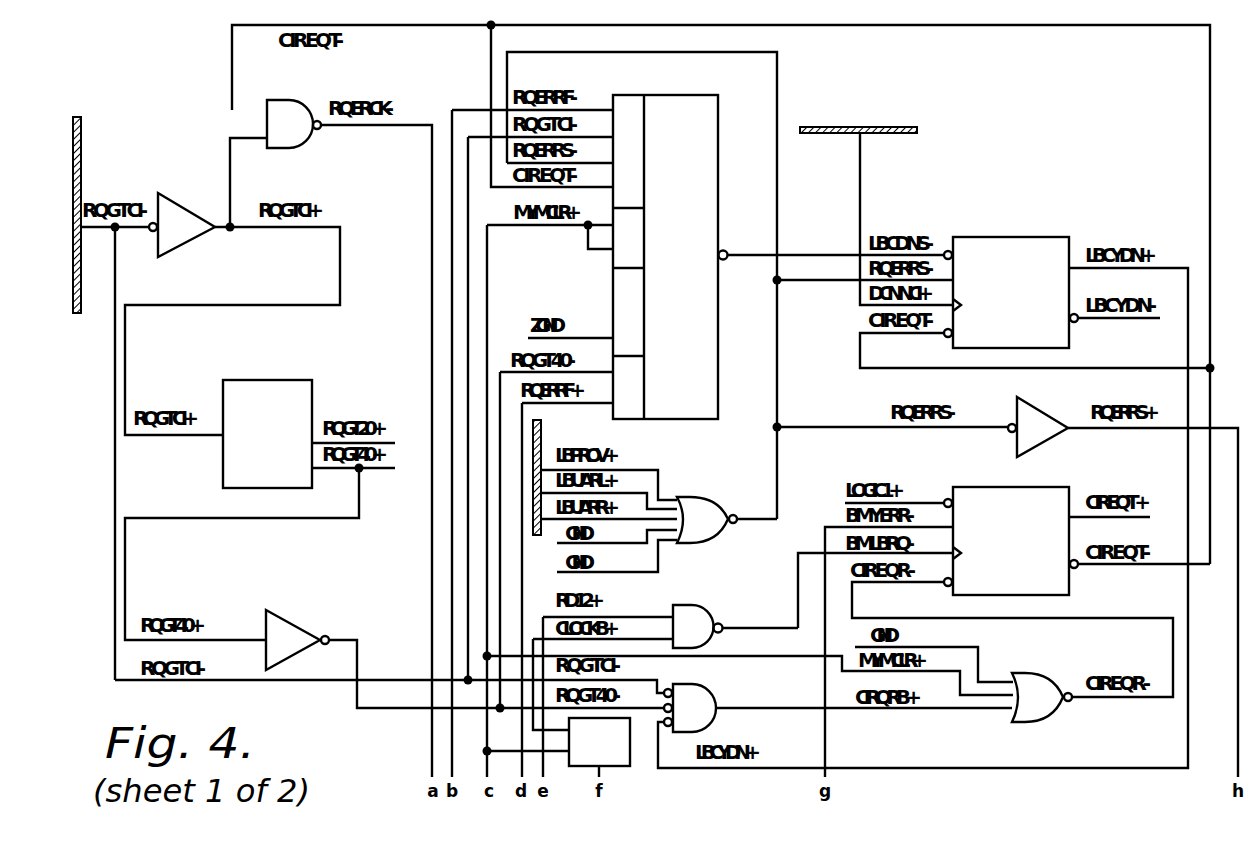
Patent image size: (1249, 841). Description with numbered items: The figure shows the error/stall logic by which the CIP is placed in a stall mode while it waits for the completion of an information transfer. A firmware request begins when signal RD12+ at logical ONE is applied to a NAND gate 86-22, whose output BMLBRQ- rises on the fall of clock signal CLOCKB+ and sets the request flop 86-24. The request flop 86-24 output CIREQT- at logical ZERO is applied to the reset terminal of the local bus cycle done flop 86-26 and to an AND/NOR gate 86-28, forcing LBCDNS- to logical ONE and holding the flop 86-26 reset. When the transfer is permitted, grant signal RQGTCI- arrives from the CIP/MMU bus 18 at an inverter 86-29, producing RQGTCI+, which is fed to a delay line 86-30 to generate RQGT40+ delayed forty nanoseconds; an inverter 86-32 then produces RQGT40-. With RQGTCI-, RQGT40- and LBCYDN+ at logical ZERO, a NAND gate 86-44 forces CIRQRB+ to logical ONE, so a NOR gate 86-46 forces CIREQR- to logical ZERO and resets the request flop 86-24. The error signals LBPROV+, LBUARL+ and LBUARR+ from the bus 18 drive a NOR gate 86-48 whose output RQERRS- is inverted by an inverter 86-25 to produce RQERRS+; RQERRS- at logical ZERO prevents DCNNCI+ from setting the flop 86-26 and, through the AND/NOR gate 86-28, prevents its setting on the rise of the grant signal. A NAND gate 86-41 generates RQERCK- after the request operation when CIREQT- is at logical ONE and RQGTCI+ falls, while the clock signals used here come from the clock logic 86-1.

The CIP/MMU bus 18 is at (82, 147).
The inverter 86-29 is at (170, 193).
The NAND gate 86-41 is at (292, 100).
The delay line 86-30 is at (283, 380).
The inverter 86-32 is at (290, 621).
The AND/NOR gate 86-28 is at (685, 95).
The NOR gate 86-48 is at (700, 497).
The NAND gate 86-22 is at (700, 605).
The NAND gate 86-44 is at (705, 684).
The clock logic 86-1 is at (617, 766).
The local bus cycle done flop 86-26 is at (1013, 237).
The inverter 86-25 is at (1045, 445).
The request flop 86-24 is at (1003, 487).
The NOR gate 86-46 is at (1035, 673).